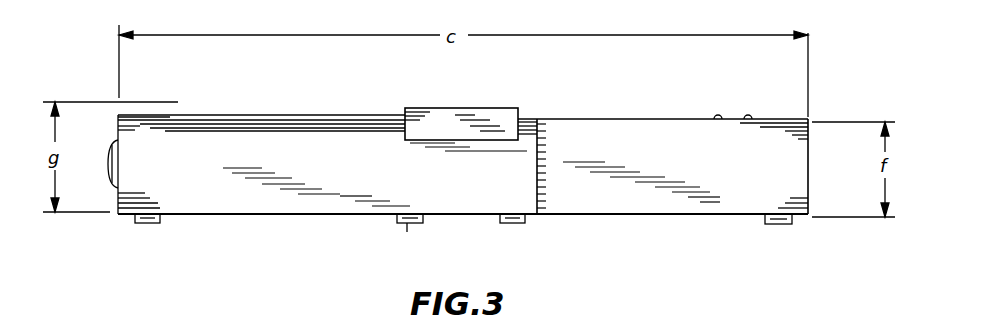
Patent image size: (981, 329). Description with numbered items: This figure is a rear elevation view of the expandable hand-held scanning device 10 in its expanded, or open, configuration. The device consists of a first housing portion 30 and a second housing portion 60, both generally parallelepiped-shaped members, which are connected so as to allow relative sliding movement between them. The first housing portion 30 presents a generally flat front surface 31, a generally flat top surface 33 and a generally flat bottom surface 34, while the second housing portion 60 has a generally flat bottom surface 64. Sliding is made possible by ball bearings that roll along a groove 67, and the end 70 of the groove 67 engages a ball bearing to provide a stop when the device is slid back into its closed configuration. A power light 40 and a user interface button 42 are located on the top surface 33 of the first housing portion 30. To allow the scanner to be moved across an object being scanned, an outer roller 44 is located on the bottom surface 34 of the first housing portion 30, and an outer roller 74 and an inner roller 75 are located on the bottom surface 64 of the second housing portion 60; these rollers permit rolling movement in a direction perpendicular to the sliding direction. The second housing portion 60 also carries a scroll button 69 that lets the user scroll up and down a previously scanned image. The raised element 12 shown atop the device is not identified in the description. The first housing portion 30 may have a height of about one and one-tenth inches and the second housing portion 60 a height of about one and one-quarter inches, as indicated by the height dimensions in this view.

The hand-held scanning device 10 is at (412, 90).
The lid / top member 12 is at (497, 107).
The first housing portion 30 is at (812, 160).
The front surface 31 is at (808, 119).
The top surface 33 is at (597, 130).
The bottom surface 34 is at (665, 217).
The power light 40 is at (747, 117).
The user interface button 42 is at (715, 117).
The first housing portion outer roller 44 is at (783, 228).
The second housing portion 60 is at (117, 120).
The bottom surface 64 is at (280, 215).
The groove 67 is at (263, 120).
The scroll button 69 is at (107, 172).
The end of groove 70 is at (137, 120).
The second housing portion outer roller 74 is at (153, 225).
The second housing portion inner roller 75 is at (523, 226).